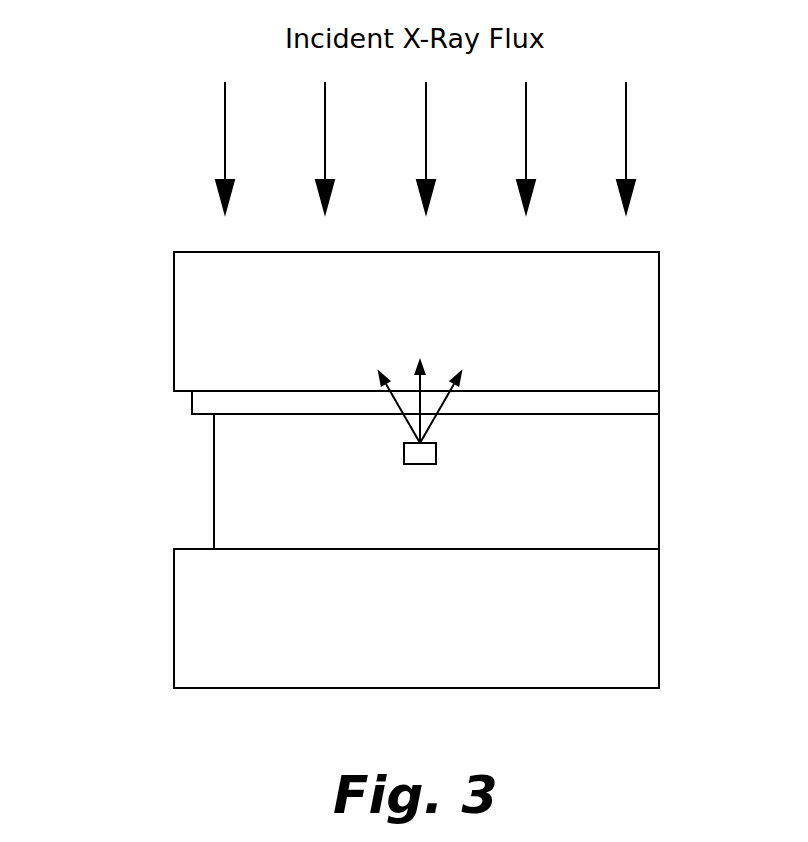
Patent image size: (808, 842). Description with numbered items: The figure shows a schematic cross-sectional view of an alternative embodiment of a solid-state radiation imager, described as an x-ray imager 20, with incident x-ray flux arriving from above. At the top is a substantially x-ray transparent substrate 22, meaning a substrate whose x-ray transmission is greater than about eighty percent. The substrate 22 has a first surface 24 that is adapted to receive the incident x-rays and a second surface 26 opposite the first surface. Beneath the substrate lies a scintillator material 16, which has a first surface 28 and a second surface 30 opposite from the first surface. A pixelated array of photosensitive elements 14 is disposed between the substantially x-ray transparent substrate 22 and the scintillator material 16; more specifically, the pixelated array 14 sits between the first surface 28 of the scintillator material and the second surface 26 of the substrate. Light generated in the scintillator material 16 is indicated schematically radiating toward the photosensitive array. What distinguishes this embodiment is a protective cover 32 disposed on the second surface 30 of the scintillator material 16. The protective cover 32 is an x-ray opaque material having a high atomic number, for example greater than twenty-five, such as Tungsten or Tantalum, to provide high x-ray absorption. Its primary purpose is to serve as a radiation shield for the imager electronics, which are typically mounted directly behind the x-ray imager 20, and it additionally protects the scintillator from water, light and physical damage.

The x-ray imager 20 is at (127, 193).
The substantially x-ray transparent substrate 22 is at (679, 297).
The first surface 24 is at (157, 247).
The second surface 26 is at (158, 397).
The first surface 28 is at (679, 419).
The pixelated array of photosensitive elements 14 is at (181, 425).
The scintillator material 16 is at (676, 469).
The second surface 30 is at (676, 548).
The protective cover 32 is at (679, 664).